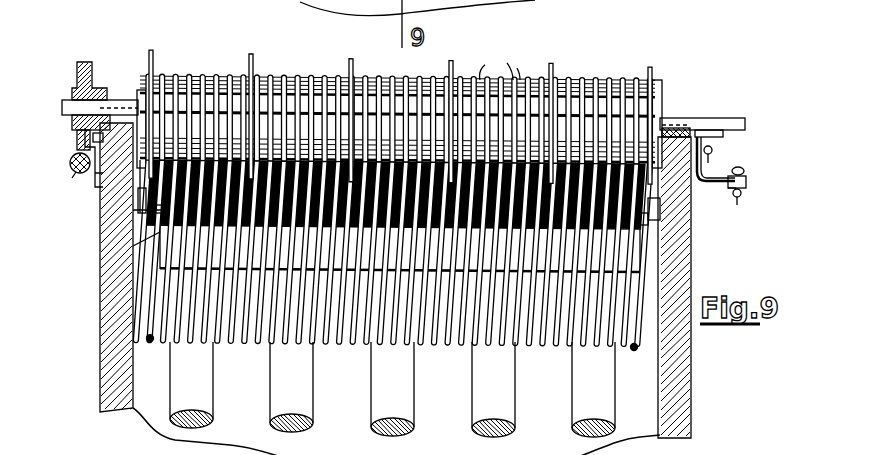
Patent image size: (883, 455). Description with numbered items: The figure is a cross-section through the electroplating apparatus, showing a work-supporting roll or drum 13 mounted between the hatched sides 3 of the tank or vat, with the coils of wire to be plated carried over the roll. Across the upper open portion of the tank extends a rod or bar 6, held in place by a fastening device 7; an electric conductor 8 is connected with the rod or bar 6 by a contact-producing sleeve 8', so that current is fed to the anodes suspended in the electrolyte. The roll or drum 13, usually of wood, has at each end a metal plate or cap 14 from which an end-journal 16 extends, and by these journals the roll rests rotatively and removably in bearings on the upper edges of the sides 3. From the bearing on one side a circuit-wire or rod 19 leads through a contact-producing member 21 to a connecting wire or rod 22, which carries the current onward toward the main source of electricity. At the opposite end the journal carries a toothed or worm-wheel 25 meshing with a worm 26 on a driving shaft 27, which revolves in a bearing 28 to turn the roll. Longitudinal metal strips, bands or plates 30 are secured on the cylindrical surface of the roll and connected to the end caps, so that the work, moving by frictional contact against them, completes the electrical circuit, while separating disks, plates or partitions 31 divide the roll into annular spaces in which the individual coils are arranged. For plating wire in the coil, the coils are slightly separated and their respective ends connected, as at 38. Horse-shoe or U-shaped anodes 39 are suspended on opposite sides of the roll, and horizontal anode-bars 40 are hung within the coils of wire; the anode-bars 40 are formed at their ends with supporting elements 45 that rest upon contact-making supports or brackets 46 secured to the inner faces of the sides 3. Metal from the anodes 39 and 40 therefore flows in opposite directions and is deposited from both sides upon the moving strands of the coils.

The sides 3 is at (100, 358).
The rod or bar 6 is at (733, 138).
The fastening device 7 is at (77, 134).
The electric conductor 8 is at (720, 158).
The contact-producing sleeve 8' is at (745, 155).
The work-supporting roll or drum 13 is at (297, 71).
The plate or cap 14 is at (139, 93).
The end-journal 16 is at (63, 100).
The circuit-wire or rod 19 is at (746, 182).
The contact-producing member 21 is at (732, 184).
The connecting wire or rod 22 is at (741, 195).
The toothed or worm-wheel 25 is at (77, 70).
The worm 26 is at (70, 163).
The driving shaft 27 is at (72, 173).
The bearing 28 is at (98, 173).
The metal strip, band or plate 30 is at (500, 59).
The separating disk, plate or partition 31 is at (250, 53).
The coil end connection 38 is at (440, 278).
The horse-shoe or U-shaped anode 39 is at (200, 404).
The anode-bar 40 is at (438, 258).
The supporting element 45 is at (110, 275).
The contact-making support or bracket 46 is at (97, 233).